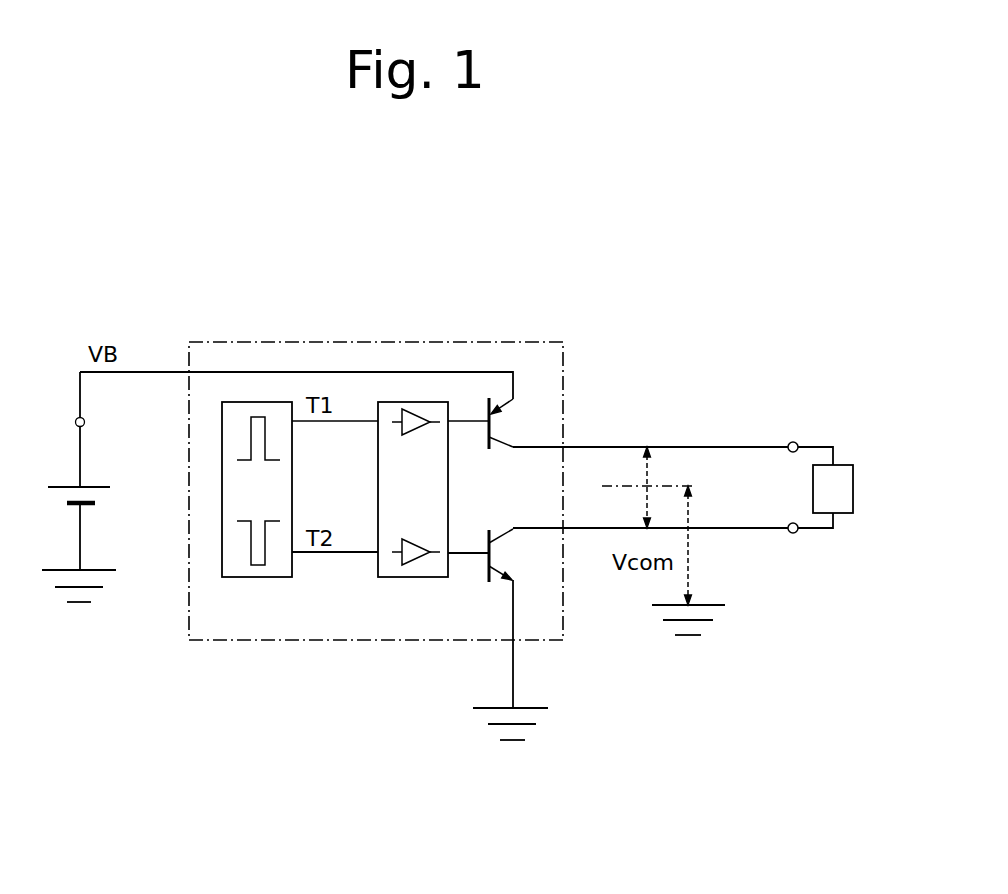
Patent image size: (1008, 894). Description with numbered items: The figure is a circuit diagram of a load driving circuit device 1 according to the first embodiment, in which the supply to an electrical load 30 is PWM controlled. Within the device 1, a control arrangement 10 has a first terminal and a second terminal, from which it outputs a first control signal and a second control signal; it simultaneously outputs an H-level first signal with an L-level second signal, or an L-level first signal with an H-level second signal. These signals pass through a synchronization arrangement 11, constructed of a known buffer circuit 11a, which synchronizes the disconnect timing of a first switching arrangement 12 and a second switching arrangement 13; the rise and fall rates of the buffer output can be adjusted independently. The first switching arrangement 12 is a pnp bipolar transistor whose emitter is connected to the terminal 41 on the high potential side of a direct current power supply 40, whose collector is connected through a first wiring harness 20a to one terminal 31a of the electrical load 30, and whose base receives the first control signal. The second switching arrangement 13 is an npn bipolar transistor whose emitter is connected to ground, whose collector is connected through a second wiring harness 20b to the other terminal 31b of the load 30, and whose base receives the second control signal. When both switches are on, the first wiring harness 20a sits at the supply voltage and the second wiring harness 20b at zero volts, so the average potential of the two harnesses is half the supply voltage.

The transmission device 1 is at (415, 342).
The control arrangement 10 is at (230, 578).
The synchronization arrangement 11 is at (375, 518).
The buffer circuit 11a is at (414, 435).
The first switching arrangement 12 is at (486, 442).
The second switching arrangement 13 is at (486, 577).
The first wiring harness 20a is at (731, 446).
The second wiring harness 20b is at (755, 532).
The electrical load 30 is at (854, 478).
The terminal of electrical load 31a is at (793, 441).
The terminal of electrical load 31b is at (796, 534).
The direct current power supply 40 is at (104, 487).
The terminal on the high potential side 41 is at (86, 422).